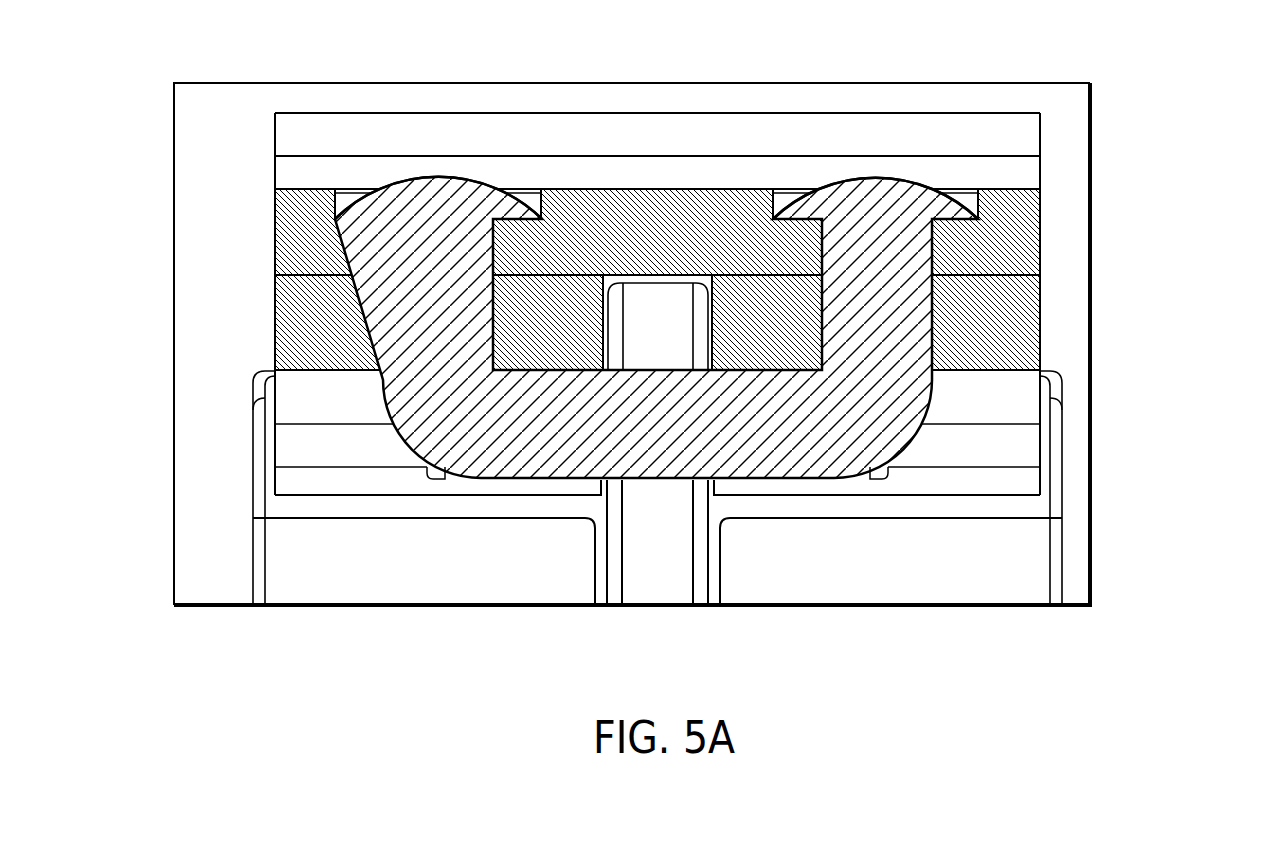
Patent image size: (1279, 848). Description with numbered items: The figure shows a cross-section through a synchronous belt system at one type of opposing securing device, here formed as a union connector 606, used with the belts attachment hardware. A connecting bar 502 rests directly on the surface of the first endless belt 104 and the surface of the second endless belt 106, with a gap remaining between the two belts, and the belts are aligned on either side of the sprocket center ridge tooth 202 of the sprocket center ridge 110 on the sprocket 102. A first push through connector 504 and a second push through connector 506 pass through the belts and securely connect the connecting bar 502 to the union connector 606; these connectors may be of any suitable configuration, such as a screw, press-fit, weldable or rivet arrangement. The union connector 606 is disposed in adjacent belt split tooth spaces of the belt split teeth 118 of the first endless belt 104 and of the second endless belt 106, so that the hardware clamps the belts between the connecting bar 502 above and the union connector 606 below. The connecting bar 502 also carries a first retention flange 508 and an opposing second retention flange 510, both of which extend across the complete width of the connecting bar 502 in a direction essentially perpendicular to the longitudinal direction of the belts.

The sprocket 102 is at (1067, 547).
The first endless belt 104 is at (1040, 328).
The second endless belt 106 is at (282, 327).
The sprocket center ridge 110 is at (652, 582).
The belt split teeth 118 is at (283, 451).
The sprocket center ridge tooth 202 is at (643, 349).
The connecting bar 502 is at (1040, 213).
The first push through connector 504 is at (877, 177).
The second push through connector 506 is at (440, 177).
The first retention flange 508 is at (758, 304).
The second retention flange 510 is at (1118, 135).
The union connector 606 is at (885, 435).